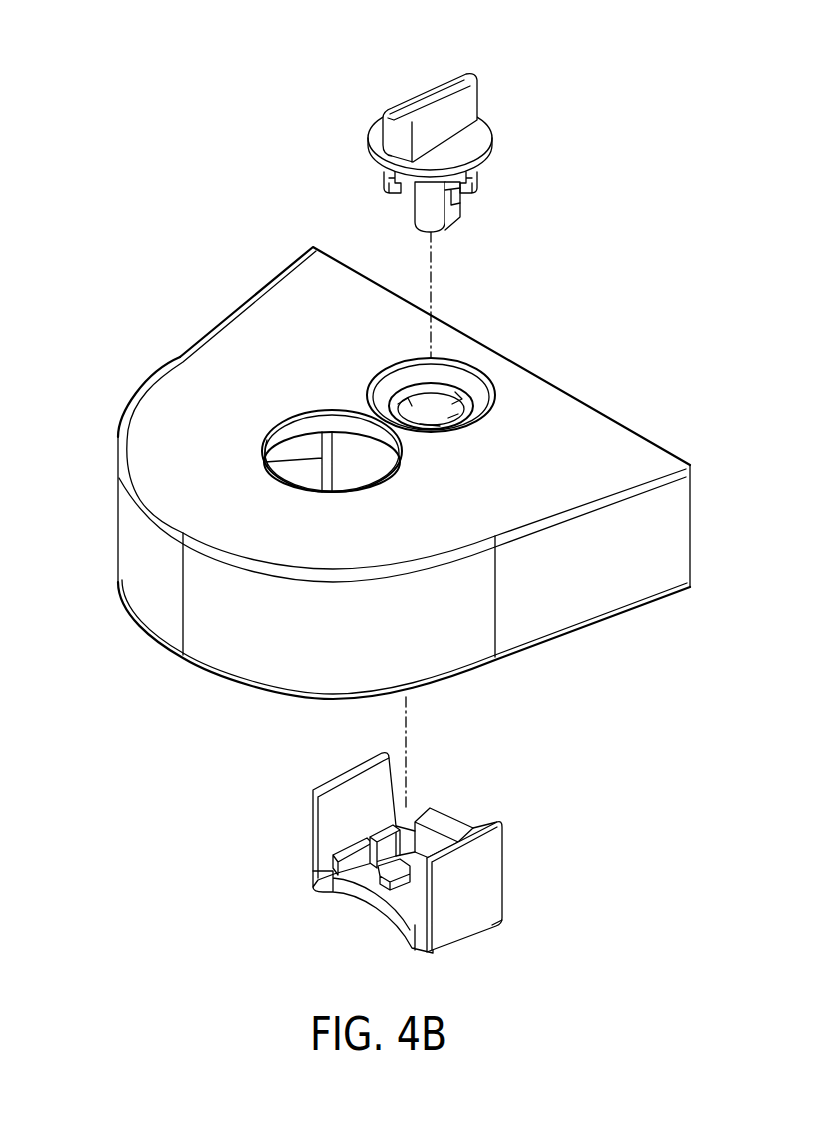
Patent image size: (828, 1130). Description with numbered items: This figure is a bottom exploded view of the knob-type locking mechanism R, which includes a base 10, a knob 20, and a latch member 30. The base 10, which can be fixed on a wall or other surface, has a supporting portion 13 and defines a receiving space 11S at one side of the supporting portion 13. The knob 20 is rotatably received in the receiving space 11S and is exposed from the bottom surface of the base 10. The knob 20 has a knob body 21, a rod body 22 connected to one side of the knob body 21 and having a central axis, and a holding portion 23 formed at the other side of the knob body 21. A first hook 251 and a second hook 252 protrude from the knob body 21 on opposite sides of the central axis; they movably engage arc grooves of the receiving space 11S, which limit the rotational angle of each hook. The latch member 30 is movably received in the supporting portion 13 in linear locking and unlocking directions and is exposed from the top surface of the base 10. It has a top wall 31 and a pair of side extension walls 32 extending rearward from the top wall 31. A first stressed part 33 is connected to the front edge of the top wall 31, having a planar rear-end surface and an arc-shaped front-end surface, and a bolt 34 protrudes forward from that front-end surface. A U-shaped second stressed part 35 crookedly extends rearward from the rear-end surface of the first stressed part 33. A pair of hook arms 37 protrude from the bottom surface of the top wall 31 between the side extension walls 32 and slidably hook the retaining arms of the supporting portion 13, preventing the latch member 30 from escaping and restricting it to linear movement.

The knob-type locking mechanism R is at (614, 221).
The base 10 is at (205, 310).
The receiving space 11S is at (460, 405).
The supporting portion 13 is at (130, 538).
The knob 20 is at (374, 82).
The knob body 21 is at (481, 138).
The rod body 22 is at (433, 227).
The holding portion 23 is at (467, 111).
The first hook 251 is at (478, 184).
The second hook 252 is at (385, 181).
The latch member 30 is at (532, 862).
The top wall 31 is at (390, 900).
The side extension walls 32 is at (333, 813).
The first stressed part 33 is at (438, 815).
The bolt 34 is at (466, 822).
The second stressed part 35 is at (385, 847).
The hook arms 37 is at (332, 862).